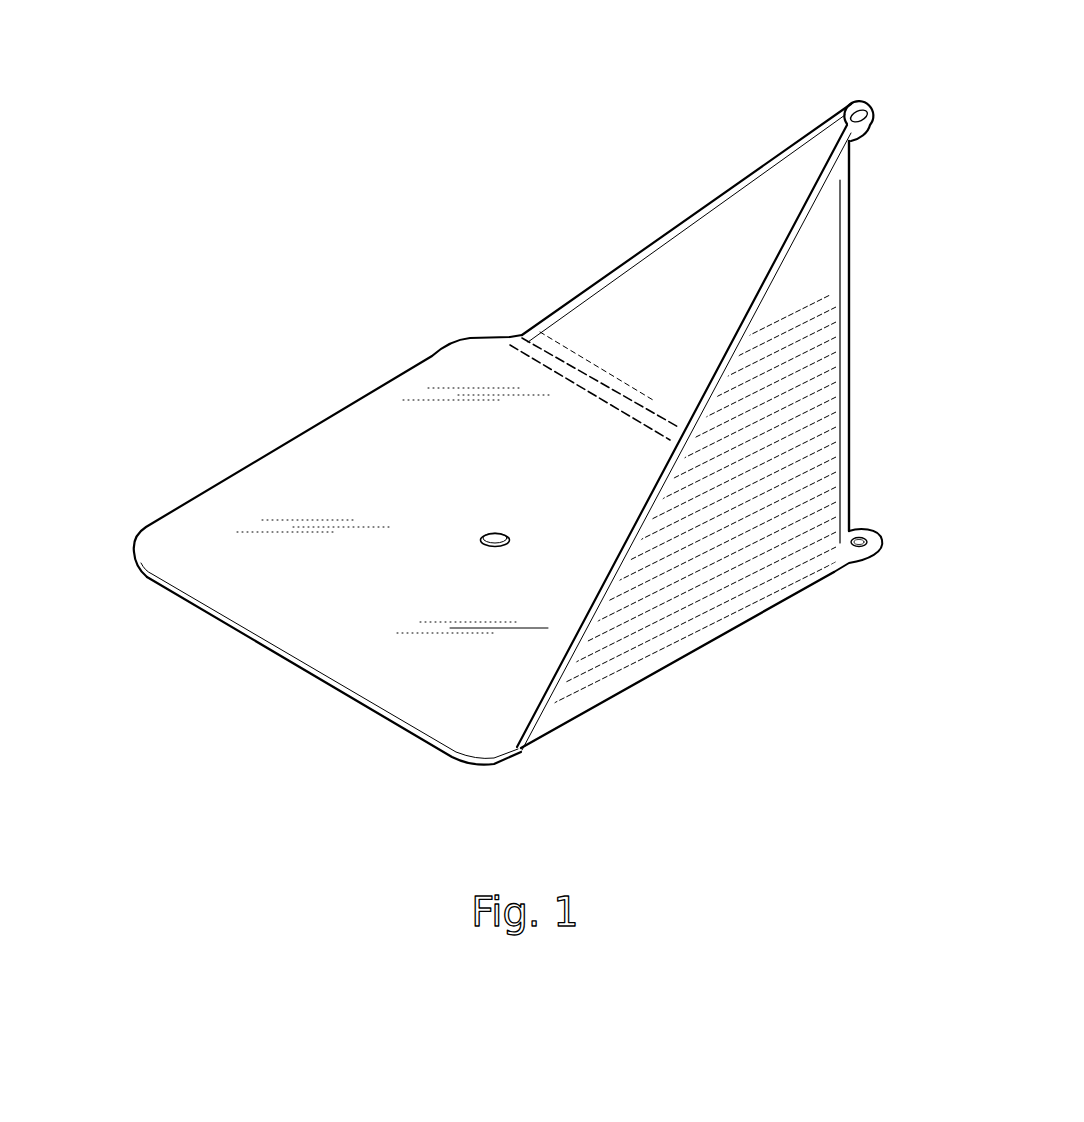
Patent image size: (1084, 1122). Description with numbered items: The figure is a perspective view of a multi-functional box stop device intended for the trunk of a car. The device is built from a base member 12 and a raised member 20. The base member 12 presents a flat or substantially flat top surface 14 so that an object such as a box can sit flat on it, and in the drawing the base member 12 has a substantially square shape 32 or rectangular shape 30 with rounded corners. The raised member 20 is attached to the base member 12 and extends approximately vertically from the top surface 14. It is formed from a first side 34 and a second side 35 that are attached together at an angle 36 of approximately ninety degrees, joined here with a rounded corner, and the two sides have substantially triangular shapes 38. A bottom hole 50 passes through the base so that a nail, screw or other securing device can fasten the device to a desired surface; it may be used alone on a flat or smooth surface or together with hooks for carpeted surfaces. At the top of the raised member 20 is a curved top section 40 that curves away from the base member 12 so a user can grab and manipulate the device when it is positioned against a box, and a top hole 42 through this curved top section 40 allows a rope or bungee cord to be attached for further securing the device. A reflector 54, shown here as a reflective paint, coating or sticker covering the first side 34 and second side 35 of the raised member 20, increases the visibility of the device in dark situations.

The base member 12 is at (265, 555).
The top surface 14 is at (383, 580).
The raised member 20 is at (880, 337).
The rectangular shape 30 is at (300, 664).
The square shape 32 is at (222, 670).
The first side 34 is at (810, 438).
The second side 35 is at (672, 278).
The angle 36 is at (752, 196).
The triangular shape 38 is at (597, 327).
The curved top section 40 is at (876, 79).
The top hole 42 is at (897, 133).
The bottom hole 50 is at (492, 533).
The reflector 54 is at (753, 533).